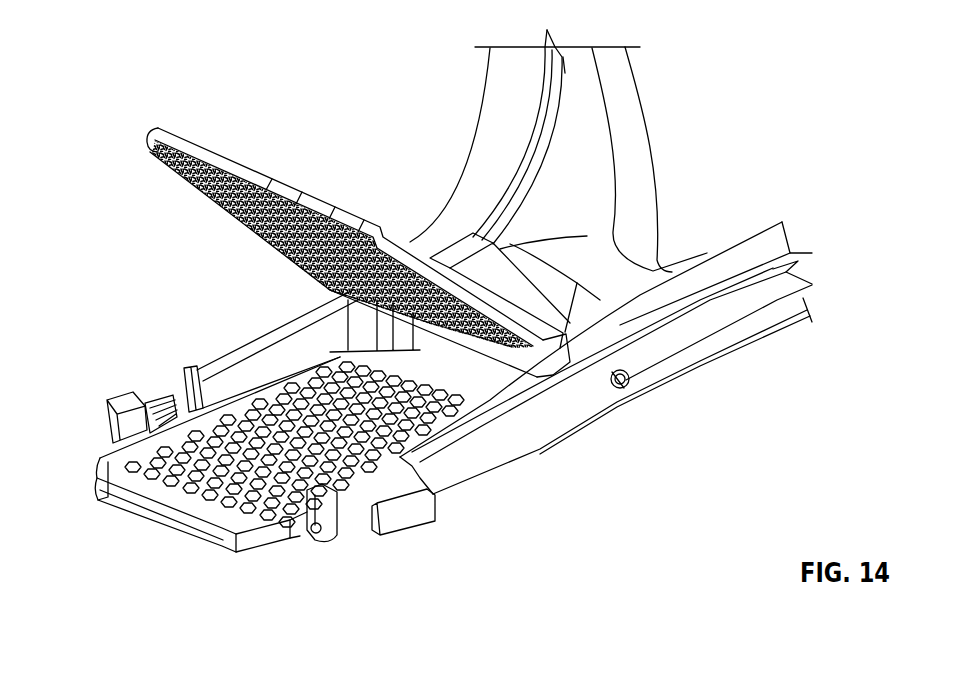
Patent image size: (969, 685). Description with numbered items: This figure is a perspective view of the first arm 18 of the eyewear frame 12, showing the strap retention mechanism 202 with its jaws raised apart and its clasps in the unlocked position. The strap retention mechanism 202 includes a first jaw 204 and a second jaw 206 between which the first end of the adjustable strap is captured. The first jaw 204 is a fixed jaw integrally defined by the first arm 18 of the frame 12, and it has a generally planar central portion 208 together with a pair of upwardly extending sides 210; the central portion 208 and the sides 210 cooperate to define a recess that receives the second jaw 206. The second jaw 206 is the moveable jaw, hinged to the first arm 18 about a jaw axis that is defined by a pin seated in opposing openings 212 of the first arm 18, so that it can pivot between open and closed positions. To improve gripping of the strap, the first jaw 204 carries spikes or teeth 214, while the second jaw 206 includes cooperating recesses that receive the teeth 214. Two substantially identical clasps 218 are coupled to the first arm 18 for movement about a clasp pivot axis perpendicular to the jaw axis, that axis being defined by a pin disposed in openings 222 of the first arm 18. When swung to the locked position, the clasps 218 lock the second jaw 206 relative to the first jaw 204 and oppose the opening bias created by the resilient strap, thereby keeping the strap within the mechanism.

The frame 12 is at (110, 65).
The first arm 18 is at (571, 438).
The strap retention mechanism 202 is at (228, 320).
The first jaw 204 is at (195, 368).
The second jaw 206 is at (150, 132).
The central portion 208 is at (124, 483).
The sides 210 is at (275, 332).
The openings 212 is at (623, 385).
The teeth 214 is at (273, 505).
The clasps 218 is at (147, 387).
The openings 222 is at (108, 452).